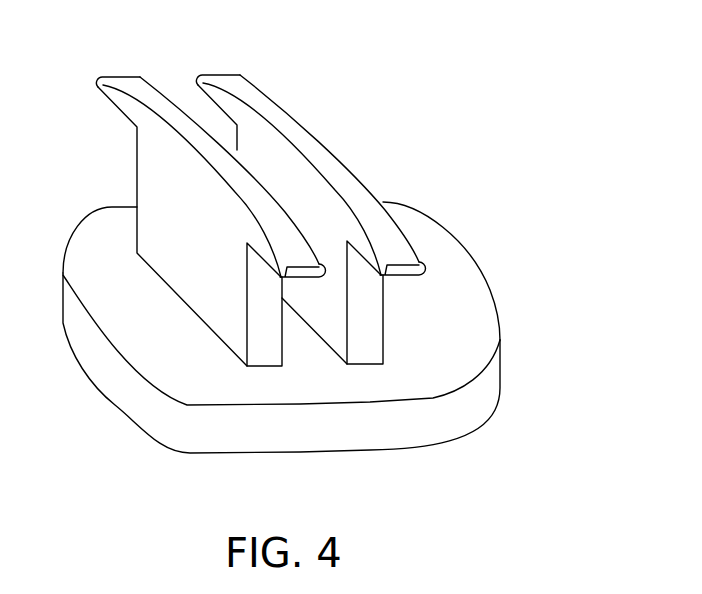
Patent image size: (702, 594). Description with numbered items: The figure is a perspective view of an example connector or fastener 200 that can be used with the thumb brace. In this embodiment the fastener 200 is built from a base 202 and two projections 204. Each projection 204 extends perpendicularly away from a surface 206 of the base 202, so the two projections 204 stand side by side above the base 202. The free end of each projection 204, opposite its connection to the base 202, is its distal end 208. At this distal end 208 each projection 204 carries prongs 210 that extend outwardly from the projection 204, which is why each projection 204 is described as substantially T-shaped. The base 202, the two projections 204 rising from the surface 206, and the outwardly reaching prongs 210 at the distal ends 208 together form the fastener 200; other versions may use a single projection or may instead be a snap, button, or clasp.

The fastener 200 is at (531, 85).
The base 202 is at (470, 440).
The projection 204 is at (153, 203).
The surface of the base 206 is at (460, 293).
The distal end 208 is at (163, 107).
The prongs 210 is at (96, 79).